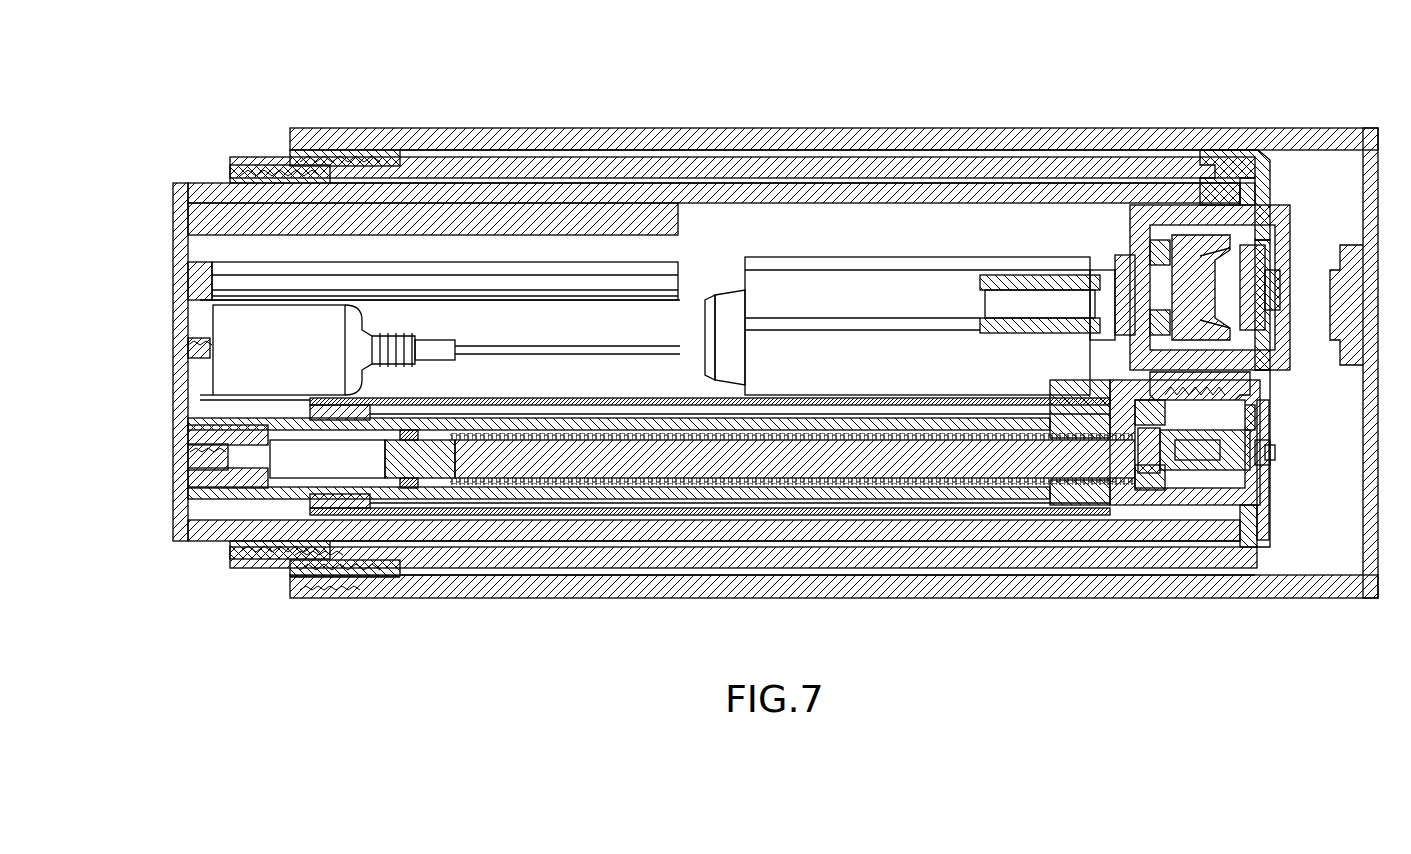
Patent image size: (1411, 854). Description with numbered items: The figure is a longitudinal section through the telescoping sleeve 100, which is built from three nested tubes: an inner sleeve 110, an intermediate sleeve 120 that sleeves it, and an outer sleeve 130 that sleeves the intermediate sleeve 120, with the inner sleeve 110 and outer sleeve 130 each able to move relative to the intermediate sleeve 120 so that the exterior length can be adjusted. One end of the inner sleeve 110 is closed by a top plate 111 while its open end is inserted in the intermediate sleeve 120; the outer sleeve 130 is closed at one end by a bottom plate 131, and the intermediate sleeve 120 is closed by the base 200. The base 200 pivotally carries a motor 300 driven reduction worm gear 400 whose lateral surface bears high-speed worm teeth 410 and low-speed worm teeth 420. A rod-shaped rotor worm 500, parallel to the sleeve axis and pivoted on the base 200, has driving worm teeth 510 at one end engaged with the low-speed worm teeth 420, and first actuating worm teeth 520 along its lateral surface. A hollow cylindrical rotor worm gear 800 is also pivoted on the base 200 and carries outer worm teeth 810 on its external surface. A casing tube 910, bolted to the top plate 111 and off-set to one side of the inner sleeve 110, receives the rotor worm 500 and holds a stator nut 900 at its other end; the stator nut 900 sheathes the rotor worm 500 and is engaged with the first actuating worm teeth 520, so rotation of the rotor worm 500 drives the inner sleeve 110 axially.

The telescoping sleeve 100 is at (508, 118).
The inner sleeve 110 is at (215, 190).
The top plate 111 is at (175, 250).
The intermediate sleeve 120 is at (265, 160).
The outer sleeve 130 is at (400, 133).
The bottom plate 131 is at (1377, 165).
The base 200 is at (1263, 190).
The motor 300 is at (890, 262).
The reduction worm gear 400 is at (1255, 388).
The high-speed worm teeth 410 is at (1253, 410).
The low-speed worm teeth 420 is at (1265, 430).
The rotor worm 500 is at (975, 505).
The driving worm teeth 510 is at (1200, 508).
The first actuating worm teeth 520 is at (930, 490).
The rotor worm gear 800 is at (1205, 217).
The outer worm teeth 810 is at (1176, 207).
The stator nut 900 is at (1070, 500).
The casing tube 910 is at (290, 505).